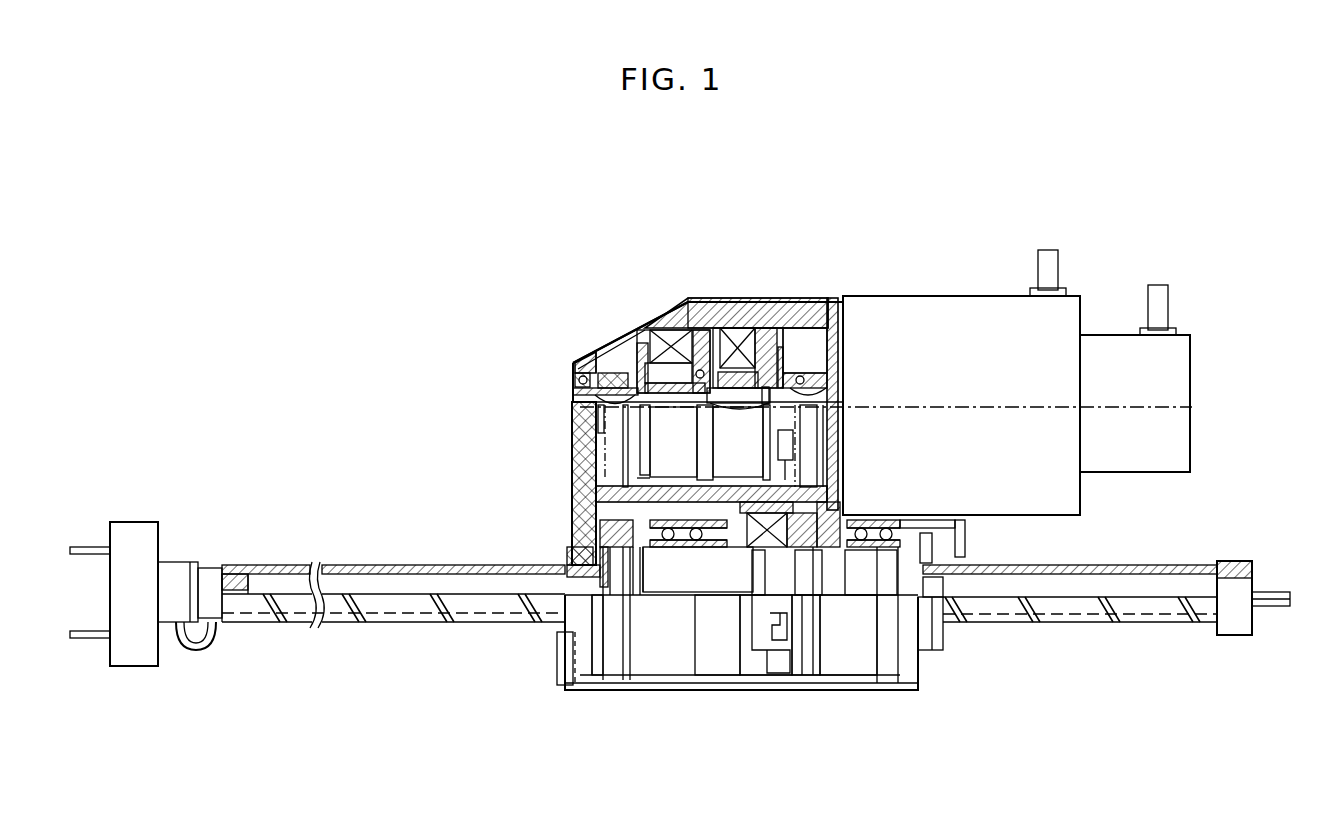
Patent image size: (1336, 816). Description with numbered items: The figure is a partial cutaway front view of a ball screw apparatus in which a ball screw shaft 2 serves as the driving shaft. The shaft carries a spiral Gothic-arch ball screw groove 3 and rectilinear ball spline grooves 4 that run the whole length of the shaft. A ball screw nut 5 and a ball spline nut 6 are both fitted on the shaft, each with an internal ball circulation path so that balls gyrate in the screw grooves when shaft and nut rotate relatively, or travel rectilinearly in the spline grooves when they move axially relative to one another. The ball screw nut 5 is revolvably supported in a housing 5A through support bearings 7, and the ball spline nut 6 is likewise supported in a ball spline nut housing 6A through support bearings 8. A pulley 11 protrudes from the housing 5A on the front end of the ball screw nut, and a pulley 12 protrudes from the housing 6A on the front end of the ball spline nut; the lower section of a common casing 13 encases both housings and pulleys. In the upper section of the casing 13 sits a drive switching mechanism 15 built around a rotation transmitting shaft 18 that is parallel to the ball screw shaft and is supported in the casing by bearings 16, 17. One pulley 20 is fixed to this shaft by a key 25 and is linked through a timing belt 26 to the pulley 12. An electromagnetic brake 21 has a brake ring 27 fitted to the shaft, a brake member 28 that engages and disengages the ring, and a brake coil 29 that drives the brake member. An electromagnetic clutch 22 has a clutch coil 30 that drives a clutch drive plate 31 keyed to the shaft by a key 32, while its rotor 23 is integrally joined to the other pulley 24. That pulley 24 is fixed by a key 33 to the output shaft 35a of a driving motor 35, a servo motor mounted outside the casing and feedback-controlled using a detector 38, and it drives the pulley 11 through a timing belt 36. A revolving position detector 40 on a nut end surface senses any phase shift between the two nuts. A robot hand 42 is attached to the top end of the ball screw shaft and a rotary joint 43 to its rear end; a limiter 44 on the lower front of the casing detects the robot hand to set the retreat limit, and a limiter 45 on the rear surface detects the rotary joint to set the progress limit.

The ball screw shaft 2 is at (258, 566).
The ball screw groove 3 is at (346, 622).
The ball spline grooves 4 is at (392, 640).
The ball screw nut 5 is at (890, 582).
The housing of the ball screw nut 5A is at (855, 672).
The ball spline nut 6 is at (676, 600).
The ball spline nut housing 6A is at (688, 640).
The support bearings 7 is at (895, 514).
The support bearings 8 is at (660, 560).
The pulley 11 is at (800, 672).
The pulley 12 is at (616, 668).
The common casing 13 is at (580, 364).
The drive switching mechanism 15 is at (605, 325).
The bearing 16 is at (578, 388).
The bearing 17 is at (690, 300).
The rotation transmitting shaft 18 is at (590, 412).
The pulley 20 is at (604, 432).
The electromagnetic brake 21 is at (674, 210).
The electromagnetic clutch 22 is at (838, 198).
The rotor 23 is at (784, 330).
The pulley 24 is at (834, 348).
The key 25 is at (622, 356).
The timing belt 26 is at (580, 492).
The brake ring 27 is at (640, 348).
The brake member 28 is at (672, 338).
The brake coil 29 is at (680, 330).
The clutch coil 30 is at (737, 328).
The clutch drive plate 31 is at (752, 330).
The key 32 is at (750, 404).
The key 33 is at (826, 392).
The driving motor 35 is at (975, 318).
The output shaft 35a is at (830, 422).
The timing belt 36 is at (806, 472).
The detector 38 is at (1110, 348).
The revolving position detector 40 is at (752, 670).
The robot hand 42 is at (130, 668).
The rotary joint 43 is at (1240, 638).
The limiter 44 is at (558, 654).
The limiter 45 is at (965, 542).